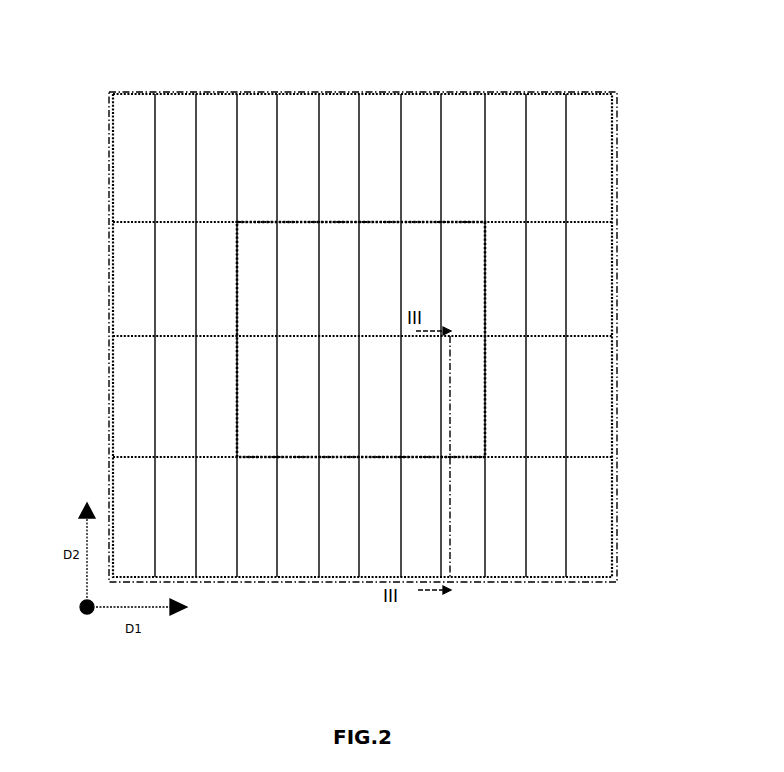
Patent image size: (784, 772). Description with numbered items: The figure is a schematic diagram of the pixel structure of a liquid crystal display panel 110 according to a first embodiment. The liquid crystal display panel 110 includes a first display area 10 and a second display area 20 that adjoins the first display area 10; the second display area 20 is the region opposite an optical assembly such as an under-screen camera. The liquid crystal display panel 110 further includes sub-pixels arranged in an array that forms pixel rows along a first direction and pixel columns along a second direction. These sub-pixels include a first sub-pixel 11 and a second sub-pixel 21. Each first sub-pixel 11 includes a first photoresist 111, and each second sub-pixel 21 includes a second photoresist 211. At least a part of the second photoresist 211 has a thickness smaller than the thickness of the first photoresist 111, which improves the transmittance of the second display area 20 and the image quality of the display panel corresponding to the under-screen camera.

The first display area 10 is at (617, 129).
The liquid crystal display panel 110 is at (383, 30).
The first sub-pixel 11 is at (130, 130).
The first photoresist 111 is at (182, 115).
The second display area 20 is at (236, 325).
The second photoresist 211 is at (464, 313).
The second sub-pixel 21 is at (473, 400).